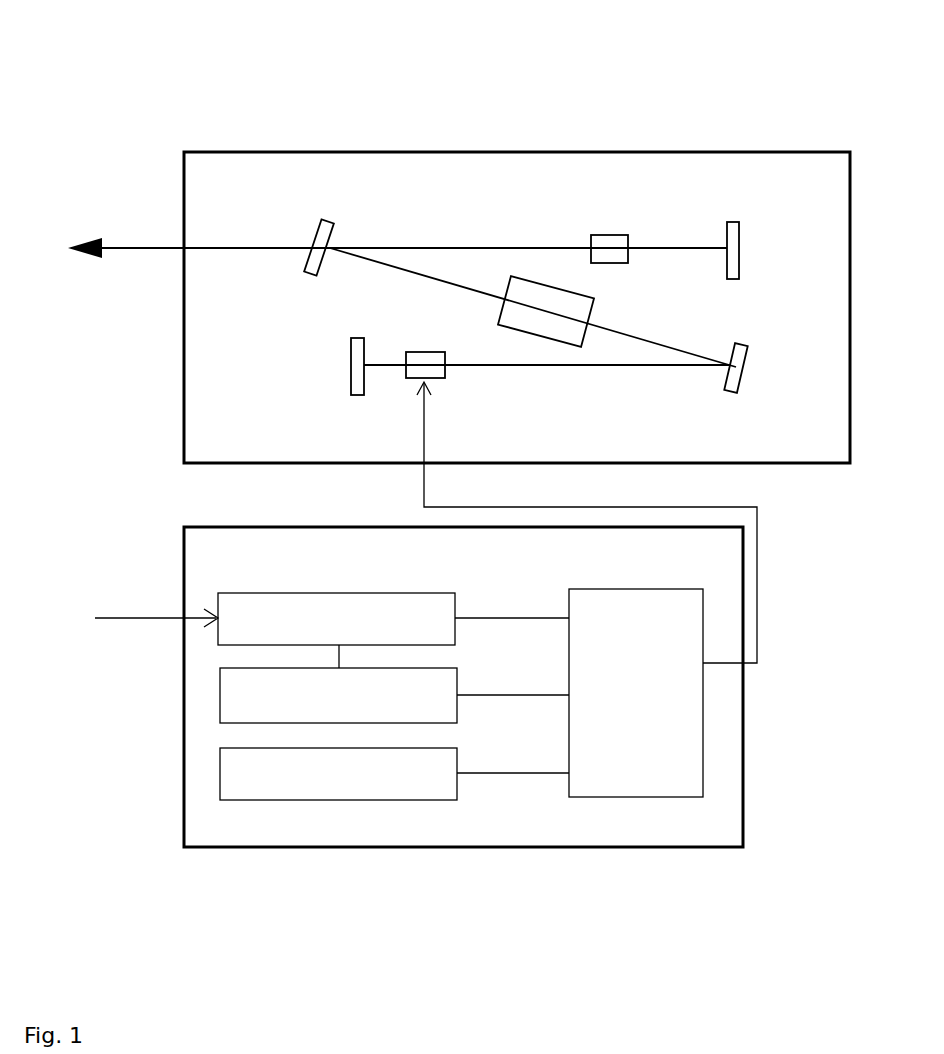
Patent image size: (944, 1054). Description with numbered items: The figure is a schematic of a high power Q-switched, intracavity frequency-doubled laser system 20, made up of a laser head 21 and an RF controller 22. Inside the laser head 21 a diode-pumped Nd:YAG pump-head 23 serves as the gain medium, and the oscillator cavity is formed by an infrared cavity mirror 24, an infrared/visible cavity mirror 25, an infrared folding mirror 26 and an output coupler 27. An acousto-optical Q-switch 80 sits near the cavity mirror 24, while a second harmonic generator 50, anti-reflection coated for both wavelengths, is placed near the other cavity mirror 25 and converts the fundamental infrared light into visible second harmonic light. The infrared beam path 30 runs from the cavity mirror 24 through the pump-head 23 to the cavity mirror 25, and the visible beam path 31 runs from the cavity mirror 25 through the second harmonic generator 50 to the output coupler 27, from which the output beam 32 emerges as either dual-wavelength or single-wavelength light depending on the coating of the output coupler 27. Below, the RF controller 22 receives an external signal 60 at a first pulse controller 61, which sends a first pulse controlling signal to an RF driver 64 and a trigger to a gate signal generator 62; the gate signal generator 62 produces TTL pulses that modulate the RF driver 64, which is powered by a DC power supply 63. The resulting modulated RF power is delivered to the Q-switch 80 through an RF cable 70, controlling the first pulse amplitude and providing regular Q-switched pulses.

The laser system 20 is at (114, 77).
The laser head 21 is at (759, 163).
The RF controller 22 is at (412, 848).
The pump-head 23 is at (538, 278).
The infrared cavity mirror 24 is at (350, 377).
The infrared/visible cavity mirror 25 is at (725, 237).
The infrared folding mirror 26 is at (722, 378).
The output coupler 27 is at (328, 225).
The infrared beam path 30 is at (578, 365).
The visible beam path 31 is at (425, 247).
The output beam 32 is at (158, 247).
The second harmonic generator 50 is at (622, 235).
The external signal 60 is at (143, 618).
The first pulse controller 61 is at (455, 633).
The gate signal generator 62 is at (457, 718).
The DC power supply 63 is at (457, 797).
The RF driver 64 is at (597, 588).
The RF cable 70 is at (757, 613).
The Q-switch 80 is at (445, 378).